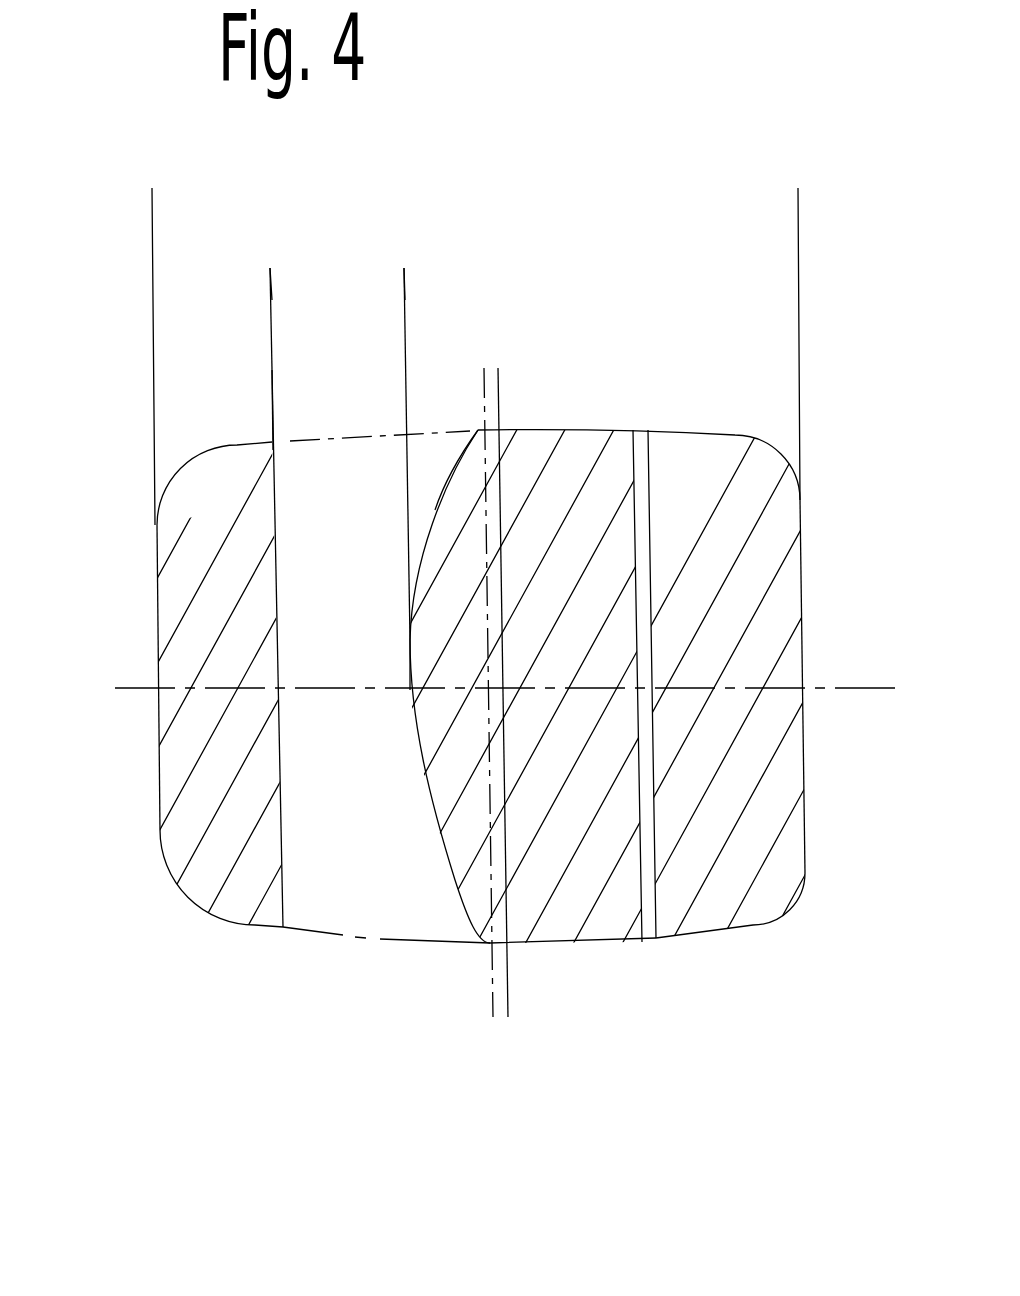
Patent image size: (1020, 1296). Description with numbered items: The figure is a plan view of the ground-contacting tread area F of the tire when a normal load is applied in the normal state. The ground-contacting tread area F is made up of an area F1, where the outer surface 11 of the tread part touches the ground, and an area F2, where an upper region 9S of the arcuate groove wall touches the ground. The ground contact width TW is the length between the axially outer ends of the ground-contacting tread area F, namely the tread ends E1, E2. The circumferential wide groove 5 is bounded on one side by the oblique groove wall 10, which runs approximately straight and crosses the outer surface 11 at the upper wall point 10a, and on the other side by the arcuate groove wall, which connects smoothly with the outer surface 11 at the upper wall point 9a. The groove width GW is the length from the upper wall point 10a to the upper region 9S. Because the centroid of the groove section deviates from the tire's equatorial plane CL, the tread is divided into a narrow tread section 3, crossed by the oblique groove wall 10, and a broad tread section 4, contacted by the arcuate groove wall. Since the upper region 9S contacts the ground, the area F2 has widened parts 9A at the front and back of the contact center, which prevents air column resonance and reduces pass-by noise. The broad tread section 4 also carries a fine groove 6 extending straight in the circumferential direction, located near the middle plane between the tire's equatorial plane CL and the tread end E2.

The narrow tread section 3 is at (220, 548).
The broad tread section 4 is at (582, 490).
The circumferential wide groove 5 is at (310, 823).
The fine groove 6 is at (645, 762).
The widened parts 9A is at (363, 457).
The upper wall point 9a is at (482, 395).
The upper region of the arcuate groove wall 9S is at (458, 847).
The oblique groove wall 10 is at (282, 903).
The upper wall point 10a is at (272, 390).
The outer surface of the tread part 11 is at (597, 880).
The ground-contacting tread area F is at (813, 505).
The ground-contacting area of the outer surface F1 is at (578, 910).
The ground-contacting area of the arcuate groove wall F2 is at (440, 790).
The tread end E1 is at (157, 600).
The tread end E2 is at (803, 592).
The tire's equatorial plane CL is at (510, 972).
The ground contact width TW is at (798, 198).
The groove width GW is at (404, 273).